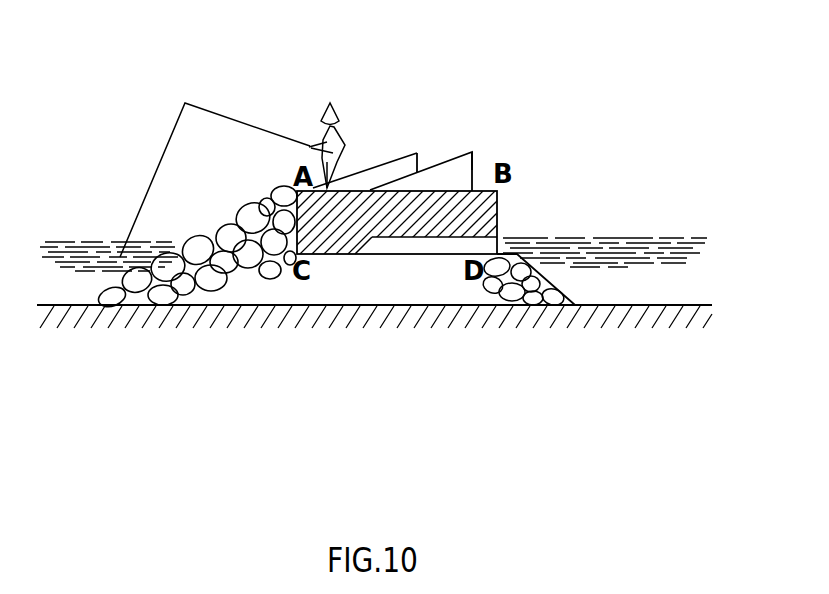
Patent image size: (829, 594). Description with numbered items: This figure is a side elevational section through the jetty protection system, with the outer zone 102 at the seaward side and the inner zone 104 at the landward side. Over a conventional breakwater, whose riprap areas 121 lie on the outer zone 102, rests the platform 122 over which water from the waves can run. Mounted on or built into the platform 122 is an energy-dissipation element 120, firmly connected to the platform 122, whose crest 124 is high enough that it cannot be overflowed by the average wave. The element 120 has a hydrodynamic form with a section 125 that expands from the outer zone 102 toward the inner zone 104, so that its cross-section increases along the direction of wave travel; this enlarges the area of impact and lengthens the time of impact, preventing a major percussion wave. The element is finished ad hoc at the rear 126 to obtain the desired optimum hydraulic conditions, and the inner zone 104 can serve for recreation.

The outer zone 102 is at (90, 268).
The inner zone 104 is at (650, 263).
The dispersion element 120 is at (447, 157).
The riprap area 121 is at (227, 240).
The platform 122 is at (293, 190).
The crest 124 is at (473, 152).
The section 125 is at (352, 173).
The rear 126 is at (417, 155).